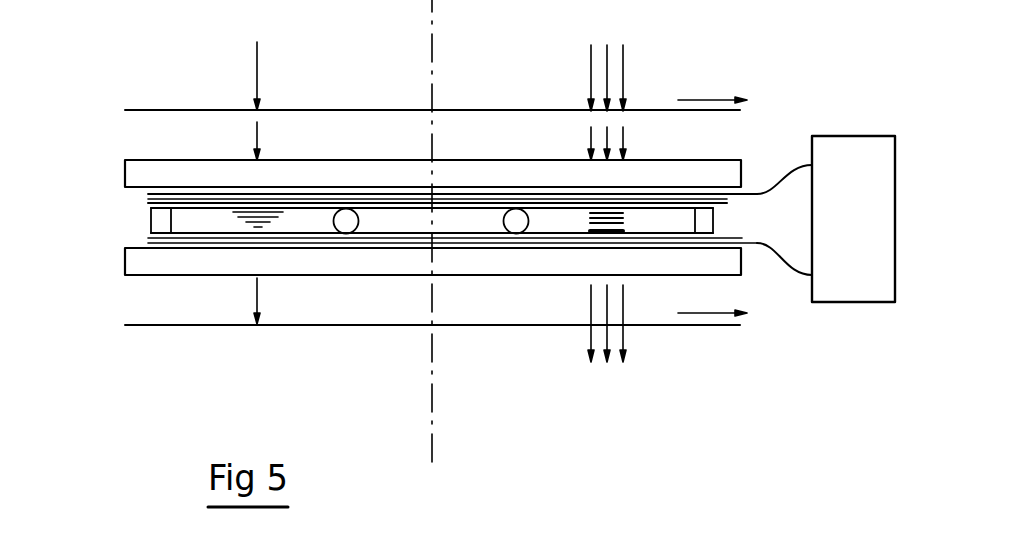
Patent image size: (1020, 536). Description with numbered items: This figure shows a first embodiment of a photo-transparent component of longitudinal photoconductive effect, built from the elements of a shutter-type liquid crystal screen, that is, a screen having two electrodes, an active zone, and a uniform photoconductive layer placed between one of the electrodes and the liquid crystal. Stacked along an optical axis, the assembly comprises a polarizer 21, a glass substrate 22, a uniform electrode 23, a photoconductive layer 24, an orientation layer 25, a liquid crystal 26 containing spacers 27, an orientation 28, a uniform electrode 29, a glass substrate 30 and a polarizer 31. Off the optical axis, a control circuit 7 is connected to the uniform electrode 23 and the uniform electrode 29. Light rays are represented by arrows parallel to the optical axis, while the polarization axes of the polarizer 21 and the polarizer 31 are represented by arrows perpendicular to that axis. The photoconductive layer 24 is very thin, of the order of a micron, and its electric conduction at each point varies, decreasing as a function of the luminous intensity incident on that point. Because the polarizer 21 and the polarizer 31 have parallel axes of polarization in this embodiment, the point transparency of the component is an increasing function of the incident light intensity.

The control circuit 7 is at (850, 285).
The polarizer 21 is at (203, 108).
The glass substrate 22 is at (165, 168).
The uniform electrode 23 is at (152, 196).
The photoconductive layer 24 is at (152, 201).
The orientation layer 25 is at (188, 218).
The liquid crystal 26 is at (150, 233).
The spacers 27 is at (510, 212).
The orientation 28 is at (150, 238).
The uniform electrode 29 is at (175, 247).
The glass substrate 30 is at (177, 263).
The polarizer 31 is at (181, 327).